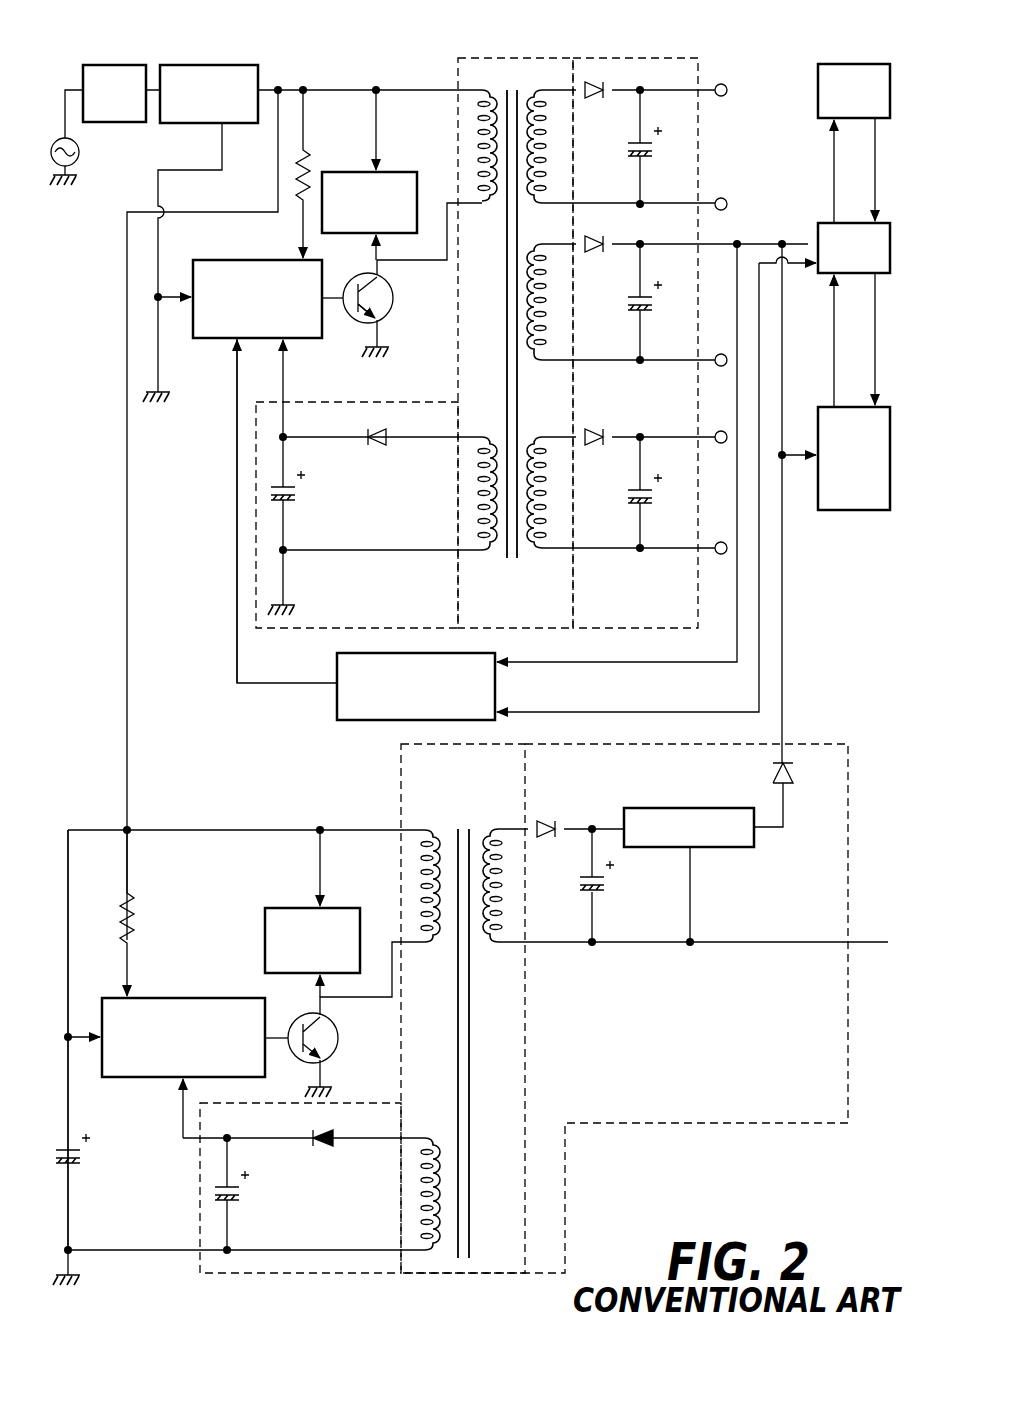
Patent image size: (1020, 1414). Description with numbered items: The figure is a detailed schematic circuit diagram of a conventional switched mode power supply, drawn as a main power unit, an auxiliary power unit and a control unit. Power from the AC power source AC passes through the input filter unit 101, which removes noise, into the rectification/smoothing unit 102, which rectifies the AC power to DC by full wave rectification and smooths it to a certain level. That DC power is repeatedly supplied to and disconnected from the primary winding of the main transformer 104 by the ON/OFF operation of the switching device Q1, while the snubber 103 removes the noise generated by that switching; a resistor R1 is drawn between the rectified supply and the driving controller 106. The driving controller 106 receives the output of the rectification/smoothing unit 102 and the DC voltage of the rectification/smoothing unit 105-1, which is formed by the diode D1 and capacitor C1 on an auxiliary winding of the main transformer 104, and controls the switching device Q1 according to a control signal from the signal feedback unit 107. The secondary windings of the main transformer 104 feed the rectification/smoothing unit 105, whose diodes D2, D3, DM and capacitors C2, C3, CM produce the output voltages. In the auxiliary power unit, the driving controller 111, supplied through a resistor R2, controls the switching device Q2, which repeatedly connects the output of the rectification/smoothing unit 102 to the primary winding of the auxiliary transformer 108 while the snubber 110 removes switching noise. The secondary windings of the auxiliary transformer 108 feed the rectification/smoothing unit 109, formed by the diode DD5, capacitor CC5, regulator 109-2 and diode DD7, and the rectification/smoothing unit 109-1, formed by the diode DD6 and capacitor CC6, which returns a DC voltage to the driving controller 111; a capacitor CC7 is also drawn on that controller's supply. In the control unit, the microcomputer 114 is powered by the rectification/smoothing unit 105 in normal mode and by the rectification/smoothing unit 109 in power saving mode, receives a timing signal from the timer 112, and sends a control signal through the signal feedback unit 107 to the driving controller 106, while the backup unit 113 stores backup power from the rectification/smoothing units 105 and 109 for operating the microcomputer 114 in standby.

The input filter unit 101 is at (110, 65).
The rectification/smoothing unit 102 is at (220, 65).
The snubber 103 is at (388, 172).
The main transformer 104 is at (488, 58).
The rectification/smoothing unit 105 is at (675, 320).
The rectification/smoothing unit 105-1 is at (365, 534).
The driving controller 106 is at (207, 260).
The signal feedback unit 107 is at (337, 703).
The auxiliary transformer 108 is at (401, 828).
The rectification/smoothing unit 109 is at (478, 1035).
The rectification/smoothing unit 109-1 is at (246, 1214).
The regulator 109-2 is at (700, 847).
The snubber 110 is at (298, 908).
The driving controller 111 is at (167, 998).
The timer 112 is at (818, 83).
The backup unit 113 is at (822, 407).
The microcomputer 114 is at (818, 222).
The AC power source AC is at (80, 152).
The resistor R1 is at (288, 174).
The resistor R2 is at (113, 913).
The switching device Q1 is at (393, 298).
The switching device Q2 is at (338, 1038).
The diode D1 is at (386, 455).
The diode D2 is at (599, 106).
The diode D3 is at (599, 260).
The diode DM is at (599, 453).
The capacitor C1 is at (306, 489).
The capacitor C2 is at (661, 147).
The capacitor C3 is at (661, 302).
The capacitor CM is at (662, 492).
The diode DD5 is at (553, 842).
The diode DD6 is at (333, 1157).
The diode DD7 is at (808, 789).
The capacitor CC5 is at (621, 878).
The capacitor CC6 is at (255, 1189).
The capacitor CC7 is at (100, 1209).